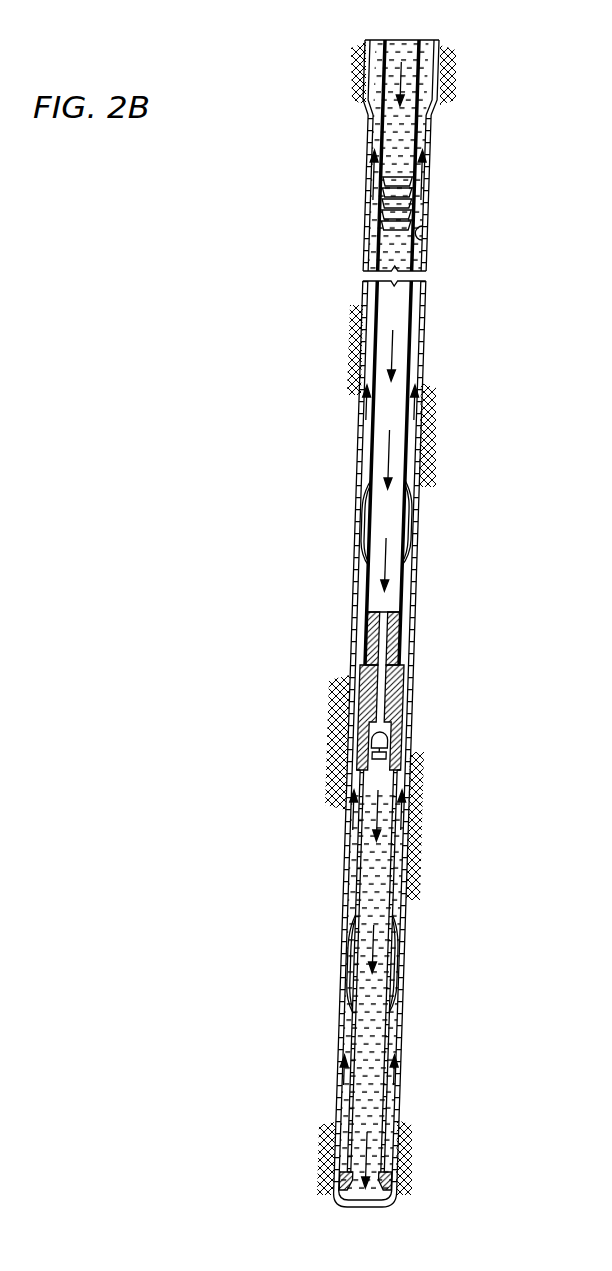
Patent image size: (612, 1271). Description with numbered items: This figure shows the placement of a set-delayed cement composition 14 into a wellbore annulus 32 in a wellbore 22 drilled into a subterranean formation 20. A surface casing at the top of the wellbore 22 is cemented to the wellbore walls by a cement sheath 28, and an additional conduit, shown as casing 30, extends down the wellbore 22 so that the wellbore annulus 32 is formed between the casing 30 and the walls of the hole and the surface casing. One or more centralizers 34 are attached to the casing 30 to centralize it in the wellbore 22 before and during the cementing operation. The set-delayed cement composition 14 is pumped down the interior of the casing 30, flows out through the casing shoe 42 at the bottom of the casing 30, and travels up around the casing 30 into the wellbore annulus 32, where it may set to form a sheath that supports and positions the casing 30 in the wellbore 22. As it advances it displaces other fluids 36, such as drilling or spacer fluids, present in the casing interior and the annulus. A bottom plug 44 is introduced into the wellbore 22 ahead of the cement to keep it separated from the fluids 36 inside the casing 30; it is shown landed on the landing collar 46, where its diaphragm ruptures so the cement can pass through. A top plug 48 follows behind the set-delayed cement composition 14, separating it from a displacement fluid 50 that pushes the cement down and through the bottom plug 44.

The set-delayed cement composition 14 is at (393, 346).
The subterranean formation 20 is at (514, 619).
The wellbore 22 is at (430, 469).
The cement sheath 28 is at (450, 62).
The casing 30 is at (410, 369).
The wellbore annulus 32 is at (357, 450).
The centralizers 34 is at (342, 963).
The fluids 36 is at (378, 793).
The casing shoe 42 is at (343, 1138).
The bottom plug 44 is at (353, 630).
The landing collar 46 is at (335, 696).
The top plug 48 is at (380, 220).
The displacement fluid 50 is at (405, 90).